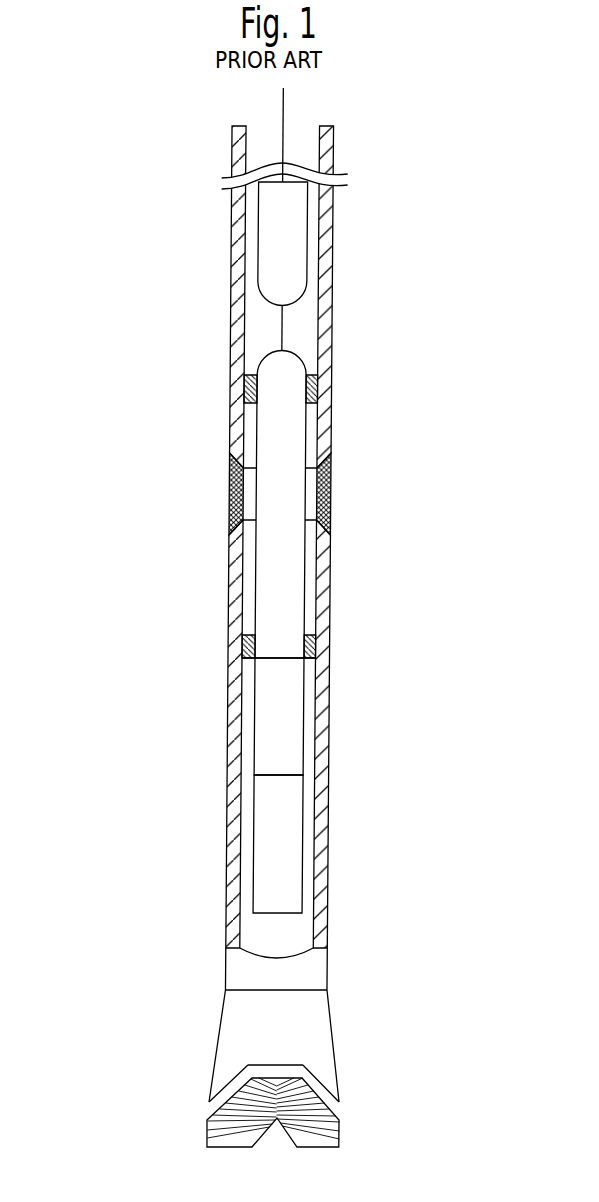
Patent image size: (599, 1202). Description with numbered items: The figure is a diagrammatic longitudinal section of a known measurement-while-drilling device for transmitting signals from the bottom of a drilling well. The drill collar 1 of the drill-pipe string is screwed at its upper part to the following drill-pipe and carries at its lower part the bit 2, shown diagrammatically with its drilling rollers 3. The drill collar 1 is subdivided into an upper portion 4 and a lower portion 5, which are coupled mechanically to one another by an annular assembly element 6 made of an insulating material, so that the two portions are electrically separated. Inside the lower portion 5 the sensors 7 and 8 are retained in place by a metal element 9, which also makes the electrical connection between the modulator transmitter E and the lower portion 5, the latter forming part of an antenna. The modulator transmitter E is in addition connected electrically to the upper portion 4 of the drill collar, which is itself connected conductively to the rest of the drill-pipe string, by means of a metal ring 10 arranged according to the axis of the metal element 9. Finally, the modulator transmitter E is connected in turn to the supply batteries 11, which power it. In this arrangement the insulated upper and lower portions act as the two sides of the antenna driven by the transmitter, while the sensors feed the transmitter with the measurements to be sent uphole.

The drill collar 1 is at (250, 617).
The bit 2 is at (333, 1052).
The drilling rollers 3 is at (238, 1135).
The upper portion 4 is at (328, 251).
The lower portion 5 is at (243, 587).
The annular assembly element 6 is at (335, 488).
The sensor 7 is at (283, 828).
The sensor 8 is at (286, 743).
The metal element 9 is at (321, 643).
The metal ring 10 is at (324, 388).
The supply batteries 11 is at (306, 227).
The modulator transmitter E is at (272, 563).